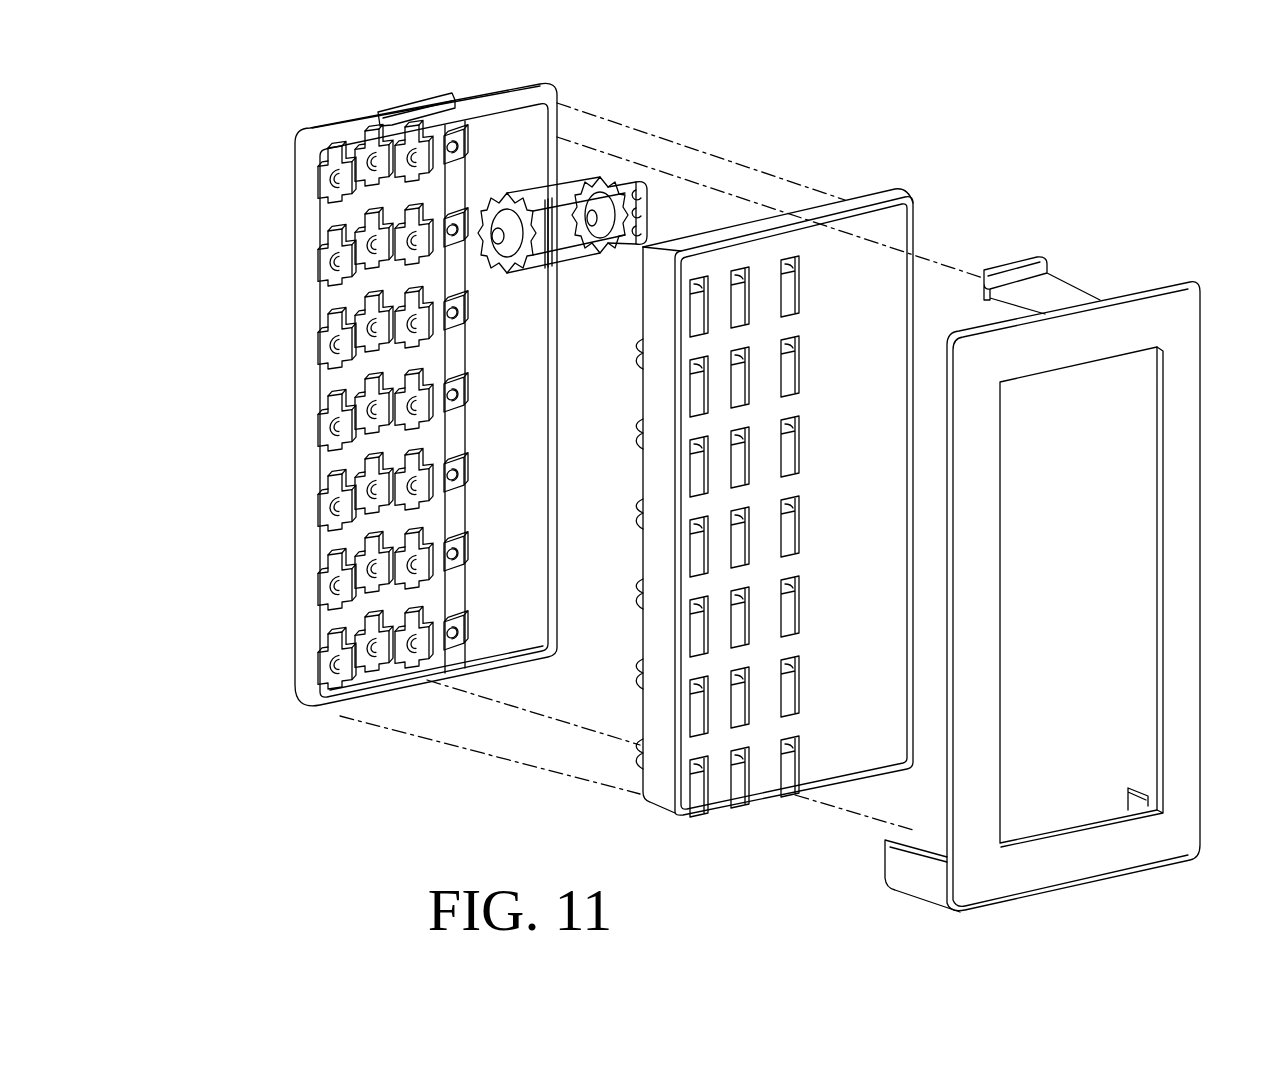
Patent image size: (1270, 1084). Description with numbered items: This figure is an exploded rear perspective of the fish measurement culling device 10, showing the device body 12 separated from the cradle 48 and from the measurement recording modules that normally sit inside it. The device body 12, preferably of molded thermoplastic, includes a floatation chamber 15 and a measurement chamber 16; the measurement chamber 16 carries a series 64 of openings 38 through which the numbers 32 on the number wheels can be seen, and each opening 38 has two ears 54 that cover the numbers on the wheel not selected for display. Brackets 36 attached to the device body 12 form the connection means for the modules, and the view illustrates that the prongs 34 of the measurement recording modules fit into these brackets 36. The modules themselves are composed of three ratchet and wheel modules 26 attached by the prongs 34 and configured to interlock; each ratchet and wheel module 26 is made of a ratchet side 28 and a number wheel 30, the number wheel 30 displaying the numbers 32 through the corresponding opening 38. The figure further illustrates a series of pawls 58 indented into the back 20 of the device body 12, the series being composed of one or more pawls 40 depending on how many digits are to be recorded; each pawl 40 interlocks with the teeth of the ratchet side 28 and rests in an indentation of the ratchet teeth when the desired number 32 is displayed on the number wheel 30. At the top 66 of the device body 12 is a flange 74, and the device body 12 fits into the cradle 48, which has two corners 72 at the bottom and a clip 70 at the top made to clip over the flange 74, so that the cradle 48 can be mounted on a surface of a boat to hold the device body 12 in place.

The fish measurement culling device 10 is at (212, 176).
The device body 12 is at (307, 684).
The floatation chamber 15 is at (517, 377).
The measurement chamber 16 is at (437, 590).
The back 20 is at (895, 225).
The ratchet and wheel module 26 is at (618, 259).
The ratchet side 28 is at (503, 268).
The number wheel 30 is at (640, 183).
The numbers 32 is at (642, 212).
The prongs 34 is at (500, 241).
The brackets 36 is at (330, 303).
The openings 38 is at (323, 243).
The pawl 40 is at (735, 775).
The cradle 48 is at (1185, 683).
The ears 54 is at (330, 562).
The series of pawls 58 is at (788, 697).
The series of openings 64 is at (330, 476).
The top 66 is at (342, 133).
The clip 70 is at (1017, 263).
The corners 72 is at (918, 898).
The flange 74 is at (398, 104).